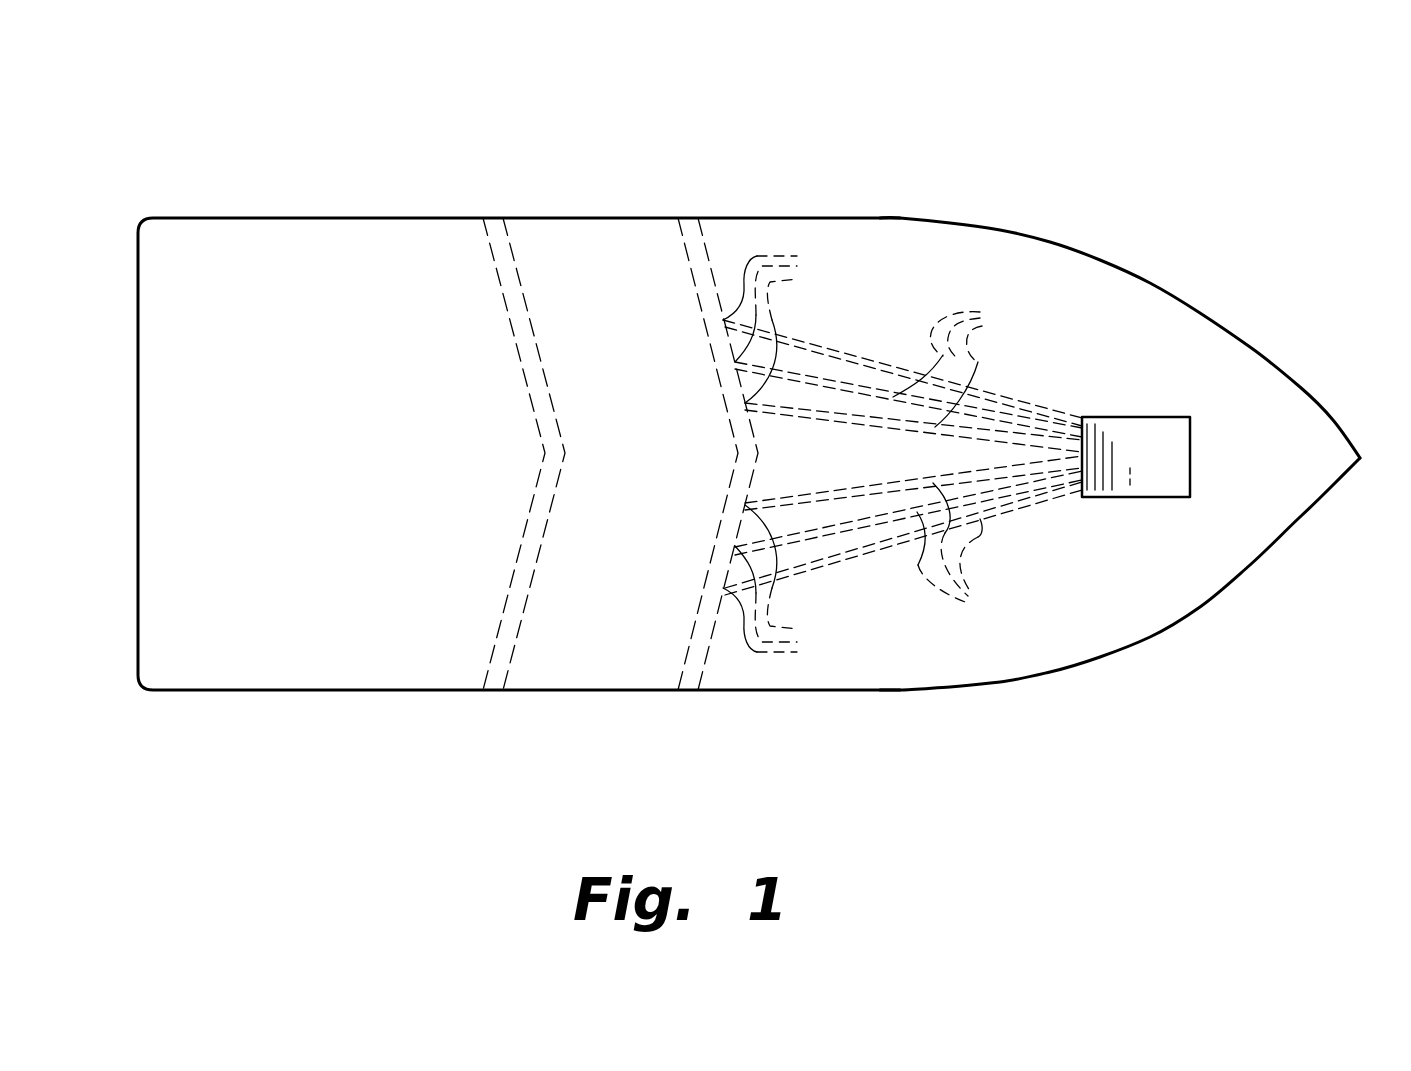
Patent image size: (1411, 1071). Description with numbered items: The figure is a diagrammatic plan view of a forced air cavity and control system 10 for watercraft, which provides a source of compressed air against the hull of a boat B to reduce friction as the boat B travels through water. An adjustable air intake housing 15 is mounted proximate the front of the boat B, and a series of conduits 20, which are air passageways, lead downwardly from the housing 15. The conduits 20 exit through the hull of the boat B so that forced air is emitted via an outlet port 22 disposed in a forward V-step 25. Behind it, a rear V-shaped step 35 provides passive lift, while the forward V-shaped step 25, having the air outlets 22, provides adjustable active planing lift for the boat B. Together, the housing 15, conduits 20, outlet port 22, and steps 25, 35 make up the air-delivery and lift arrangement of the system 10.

The forced air cavity and control system 10 is at (1276, 109).
The boat B is at (1130, 640).
The adjustable air intake housing 15 is at (1167, 417).
The conduits 20 is at (955, 451).
The outlet port 22 is at (782, 454).
The V-step 25 is at (703, 244).
The rear V-shaped step 35 is at (508, 244).